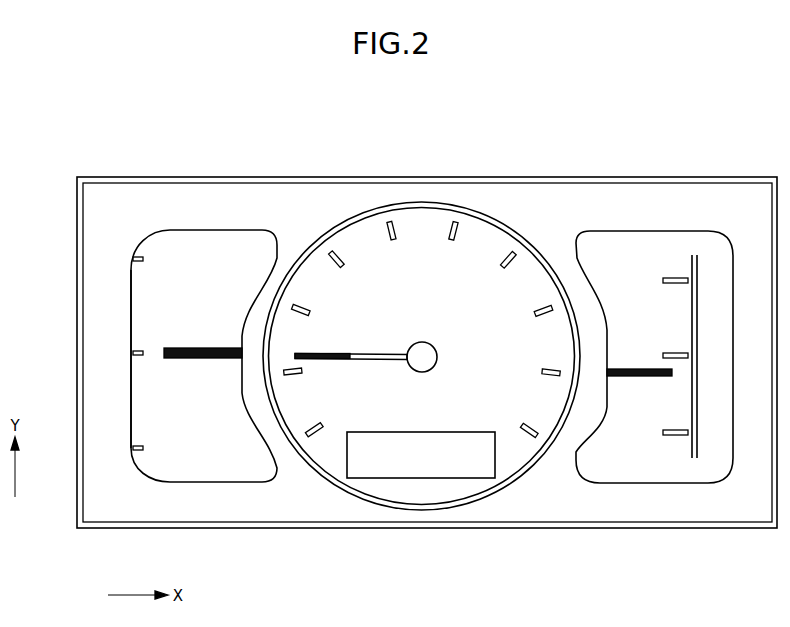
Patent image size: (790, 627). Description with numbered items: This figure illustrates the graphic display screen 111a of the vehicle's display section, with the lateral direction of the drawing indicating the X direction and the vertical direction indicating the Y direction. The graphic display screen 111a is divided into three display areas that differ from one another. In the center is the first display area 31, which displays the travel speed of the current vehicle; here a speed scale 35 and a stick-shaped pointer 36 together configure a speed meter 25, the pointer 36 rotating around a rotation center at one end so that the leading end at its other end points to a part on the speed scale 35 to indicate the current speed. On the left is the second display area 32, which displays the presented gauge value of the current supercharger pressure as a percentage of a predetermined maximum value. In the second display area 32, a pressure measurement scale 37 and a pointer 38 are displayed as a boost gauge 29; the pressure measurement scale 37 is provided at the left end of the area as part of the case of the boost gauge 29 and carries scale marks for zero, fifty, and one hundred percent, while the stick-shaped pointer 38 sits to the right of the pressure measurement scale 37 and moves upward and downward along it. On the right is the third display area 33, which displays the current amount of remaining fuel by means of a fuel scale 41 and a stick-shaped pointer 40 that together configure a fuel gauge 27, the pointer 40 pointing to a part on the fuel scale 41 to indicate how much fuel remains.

The graphic display screen 111a is at (232, 178).
The boost gauge 29 is at (169, 230).
The second display area 32 is at (198, 225).
The pressure measurement scale 37 is at (131, 270).
The pointer 38 is at (178, 350).
The first display area 31 is at (448, 197).
The speed meter 25 is at (413, 201).
The speed scale 35 is at (505, 250).
The pointer 36 is at (373, 352).
The fuel gauge 27 is at (603, 230).
The third display area 33 is at (686, 225).
The fuel scale 41 is at (690, 260).
The pointer 40 is at (672, 383).